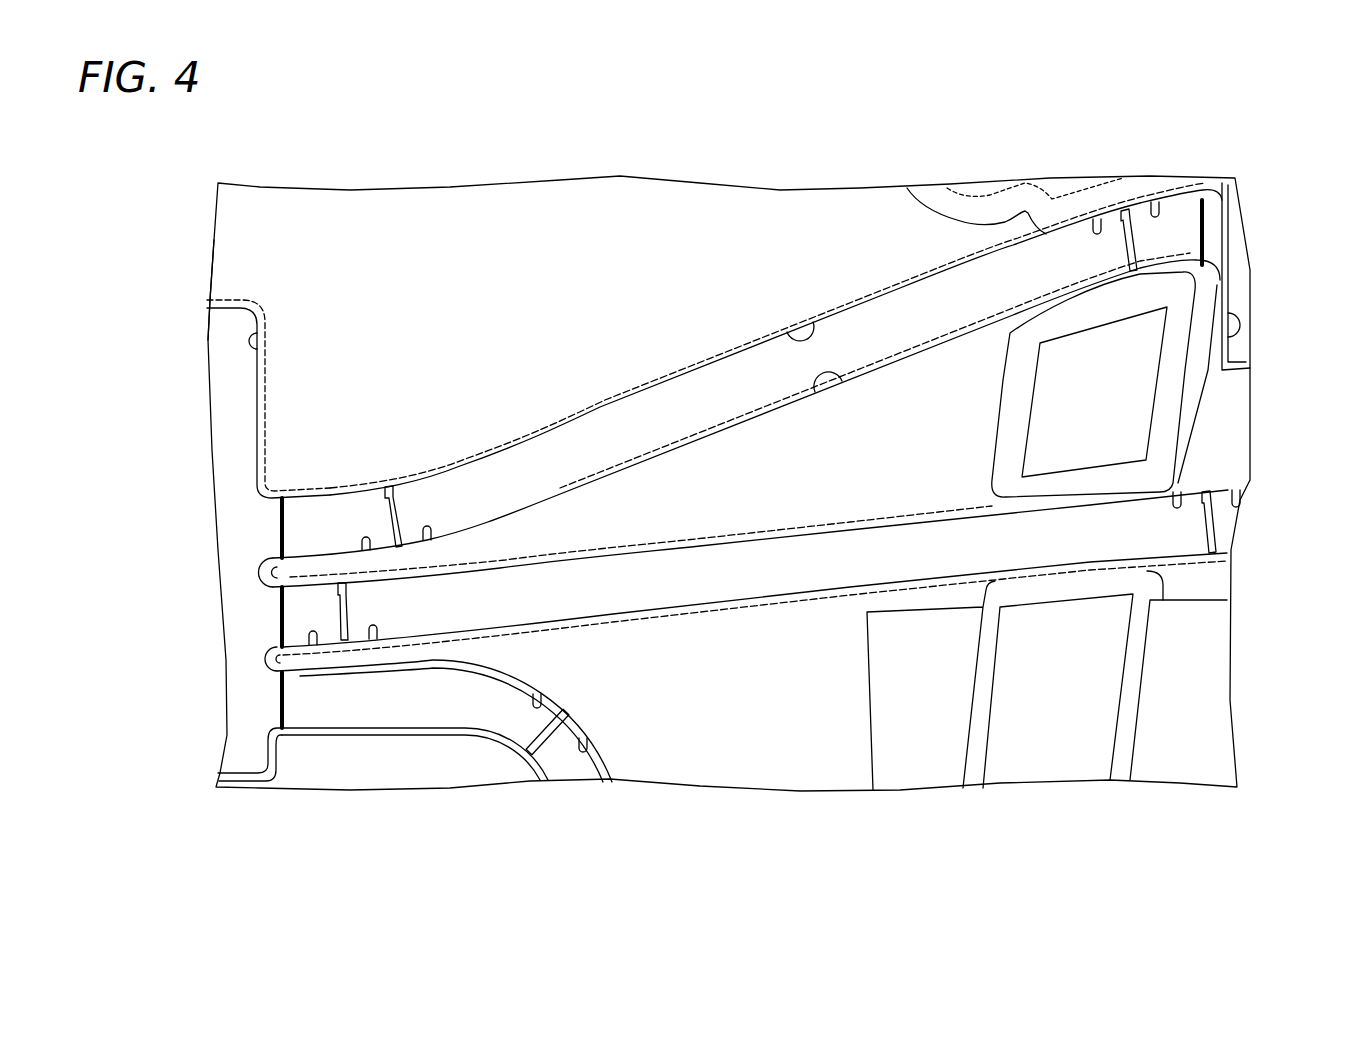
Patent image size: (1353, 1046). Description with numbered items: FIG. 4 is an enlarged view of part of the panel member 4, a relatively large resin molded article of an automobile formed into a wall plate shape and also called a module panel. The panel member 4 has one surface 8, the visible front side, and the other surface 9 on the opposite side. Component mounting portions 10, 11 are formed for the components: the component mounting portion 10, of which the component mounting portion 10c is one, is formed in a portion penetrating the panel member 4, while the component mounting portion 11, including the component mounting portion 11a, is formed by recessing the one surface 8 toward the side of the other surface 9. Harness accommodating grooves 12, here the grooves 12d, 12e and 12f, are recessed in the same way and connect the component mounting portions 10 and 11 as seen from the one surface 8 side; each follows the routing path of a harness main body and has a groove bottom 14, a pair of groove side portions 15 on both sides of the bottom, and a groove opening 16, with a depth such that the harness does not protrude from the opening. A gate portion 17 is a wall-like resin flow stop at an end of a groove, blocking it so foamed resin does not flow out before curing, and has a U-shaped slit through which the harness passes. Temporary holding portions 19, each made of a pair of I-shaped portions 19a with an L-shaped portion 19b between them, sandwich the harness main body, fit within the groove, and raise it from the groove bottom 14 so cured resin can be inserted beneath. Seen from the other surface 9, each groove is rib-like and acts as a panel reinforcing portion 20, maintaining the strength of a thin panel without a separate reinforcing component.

The panel member 4 is at (287, 210).
The one surface 8 is at (233, 227).
The other surface 9 is at (222, 262).
The component mounting portion 10 is at (1111, 384).
The component mounting portion 10c is at (1230, 337).
The component mounting portion 11 is at (312, 395).
The component mounting portion 11a is at (255, 342).
The harness accommodating groove 12 is at (723, 518).
The harness accommodating groove 12d is at (741, 385).
The harness accommodating groove 12e is at (748, 560).
The harness accommodating groove 12f is at (423, 713).
The groove bottom 14 is at (732, 390).
The groove side portions 15 is at (812, 325).
The groove opening 16 is at (883, 327).
The gate portion 17 is at (280, 549).
The temporary holding portion 19 is at (463, 382).
The I-shaped portions 19a is at (363, 542).
The L-shaped portion 19b is at (388, 485).
The panel reinforcing portion 20 is at (935, 348).